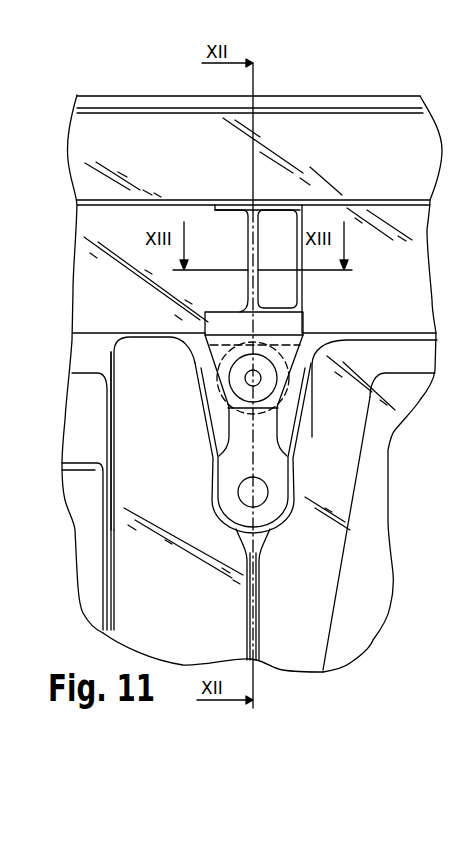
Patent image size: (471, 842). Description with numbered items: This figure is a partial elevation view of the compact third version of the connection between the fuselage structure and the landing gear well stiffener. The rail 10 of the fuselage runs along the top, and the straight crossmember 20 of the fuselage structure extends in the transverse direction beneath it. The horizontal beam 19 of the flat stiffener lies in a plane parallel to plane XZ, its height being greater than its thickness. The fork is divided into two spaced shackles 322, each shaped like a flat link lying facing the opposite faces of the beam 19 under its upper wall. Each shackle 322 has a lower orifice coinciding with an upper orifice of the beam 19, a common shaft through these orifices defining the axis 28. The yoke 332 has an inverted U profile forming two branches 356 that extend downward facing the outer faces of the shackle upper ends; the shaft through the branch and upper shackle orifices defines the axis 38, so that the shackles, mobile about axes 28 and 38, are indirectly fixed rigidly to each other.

The rail 10 is at (348, 142).
The horizontal beam 19 is at (366, 480).
The crossmember 20 is at (268, 287).
The axis 28 is at (257, 490).
The axis 38 is at (231, 371).
The shackle 322 is at (232, 482).
The yoke 332 is at (207, 312).
The branch 356 is at (207, 342).